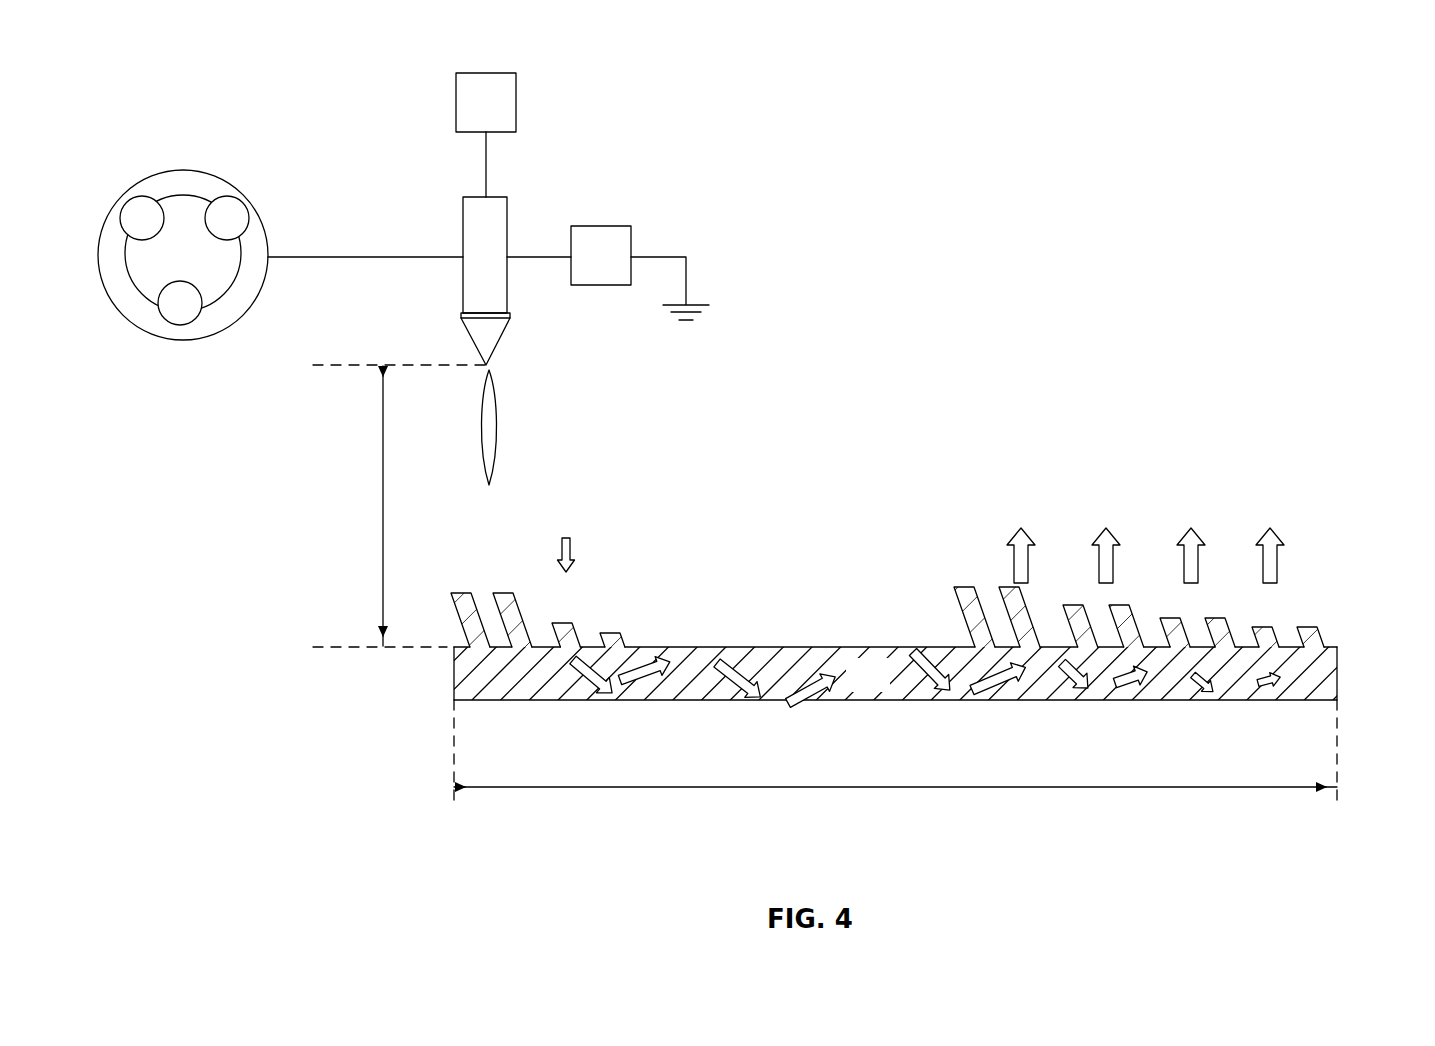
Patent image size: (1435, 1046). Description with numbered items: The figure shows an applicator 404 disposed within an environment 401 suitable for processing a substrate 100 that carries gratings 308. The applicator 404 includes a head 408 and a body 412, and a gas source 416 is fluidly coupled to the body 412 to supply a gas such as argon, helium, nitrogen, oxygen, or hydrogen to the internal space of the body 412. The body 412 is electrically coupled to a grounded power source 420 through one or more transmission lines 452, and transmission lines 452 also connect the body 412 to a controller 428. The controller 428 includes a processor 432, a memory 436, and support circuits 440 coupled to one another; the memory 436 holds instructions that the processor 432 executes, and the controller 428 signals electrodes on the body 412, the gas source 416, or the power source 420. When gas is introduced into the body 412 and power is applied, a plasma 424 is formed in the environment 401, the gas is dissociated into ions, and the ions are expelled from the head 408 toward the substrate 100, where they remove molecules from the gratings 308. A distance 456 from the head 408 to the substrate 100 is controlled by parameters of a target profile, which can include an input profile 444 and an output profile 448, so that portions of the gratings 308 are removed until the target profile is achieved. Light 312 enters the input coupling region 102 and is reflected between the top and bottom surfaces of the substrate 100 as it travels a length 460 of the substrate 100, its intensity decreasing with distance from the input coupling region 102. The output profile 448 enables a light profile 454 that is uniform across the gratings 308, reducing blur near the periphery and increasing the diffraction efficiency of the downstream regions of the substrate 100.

The environment 401 is at (823, 402).
The applicator 404 is at (578, 110).
The head 408 is at (478, 347).
The body 412 is at (470, 226).
The gas source 416 is at (464, 118).
The power source 420 is at (579, 270).
The plasma 424 is at (515, 420).
The controller 428 is at (202, 142).
The processor 432 is at (248, 217).
The memory 436 is at (177, 323).
The support circuits 440 is at (138, 198).
The transmission lines 452 is at (350, 258).
The distance 456 is at (383, 498).
The light 312 is at (560, 550).
The input profile 444 is at (574, 600).
The output profile 448 is at (1322, 598).
The light profile 454 is at (1117, 463).
The substrate 100 is at (890, 688).
The input coupling region 102 is at (553, 712).
The gratings 308 is at (1347, 640).
The length 460 is at (873, 787).